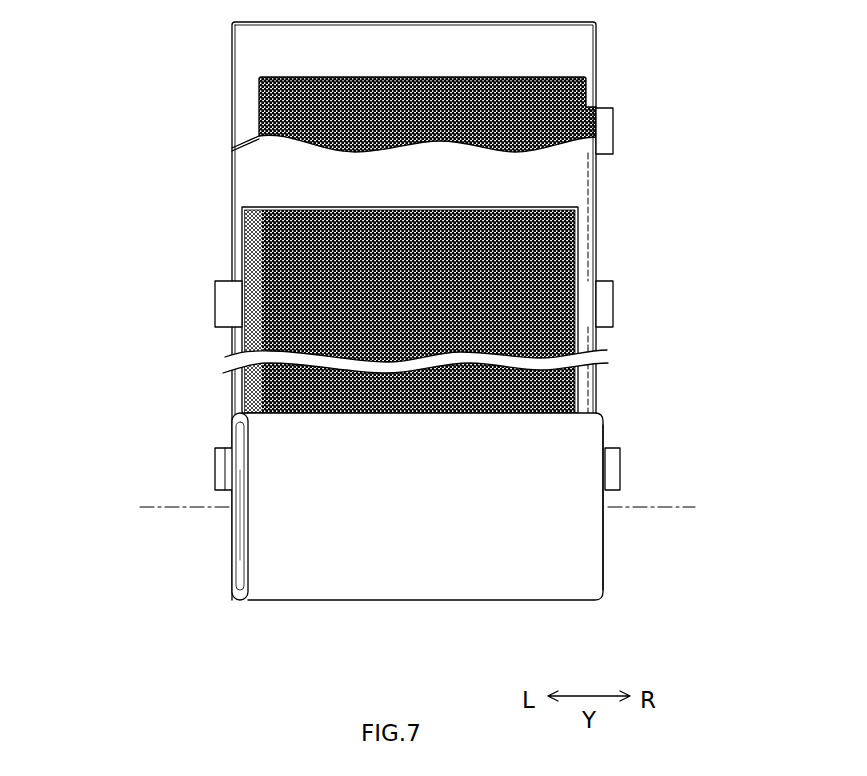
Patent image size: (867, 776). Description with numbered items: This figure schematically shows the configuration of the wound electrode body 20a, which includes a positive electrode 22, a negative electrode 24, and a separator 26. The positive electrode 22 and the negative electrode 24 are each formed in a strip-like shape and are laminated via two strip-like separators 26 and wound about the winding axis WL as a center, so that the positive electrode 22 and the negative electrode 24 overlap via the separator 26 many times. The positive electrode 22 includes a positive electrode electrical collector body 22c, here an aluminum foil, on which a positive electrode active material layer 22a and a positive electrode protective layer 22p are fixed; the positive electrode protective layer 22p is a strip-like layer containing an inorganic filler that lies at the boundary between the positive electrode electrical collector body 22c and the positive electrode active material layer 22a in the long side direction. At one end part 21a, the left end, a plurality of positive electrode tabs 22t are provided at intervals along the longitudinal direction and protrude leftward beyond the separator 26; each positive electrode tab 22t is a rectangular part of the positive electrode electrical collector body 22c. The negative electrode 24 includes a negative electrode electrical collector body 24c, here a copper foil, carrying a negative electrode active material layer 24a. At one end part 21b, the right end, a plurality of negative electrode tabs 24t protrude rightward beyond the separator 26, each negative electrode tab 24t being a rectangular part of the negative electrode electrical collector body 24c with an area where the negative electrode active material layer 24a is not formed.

The electrode body 20a is at (481, 590).
The one end part 21a is at (232, 553).
The one end part 21b is at (606, 548).
The positive electrode 22 is at (305, 346).
The positive electrode active material layer 22a is at (295, 272).
The positive electrode electrical collector body 22c is at (243, 338).
The positive electrode protective layer 22p is at (243, 223).
The positive electrode tab 22t is at (222, 306).
The negative electrode 24 is at (511, 281).
The negative electrode active material layer 24a is at (565, 100).
The negative electrode electrical collector body 24c is at (588, 214).
The negative electrode tab 24t is at (614, 130).
The separator 26 is at (252, 43).
The winding axis WL is at (682, 507).